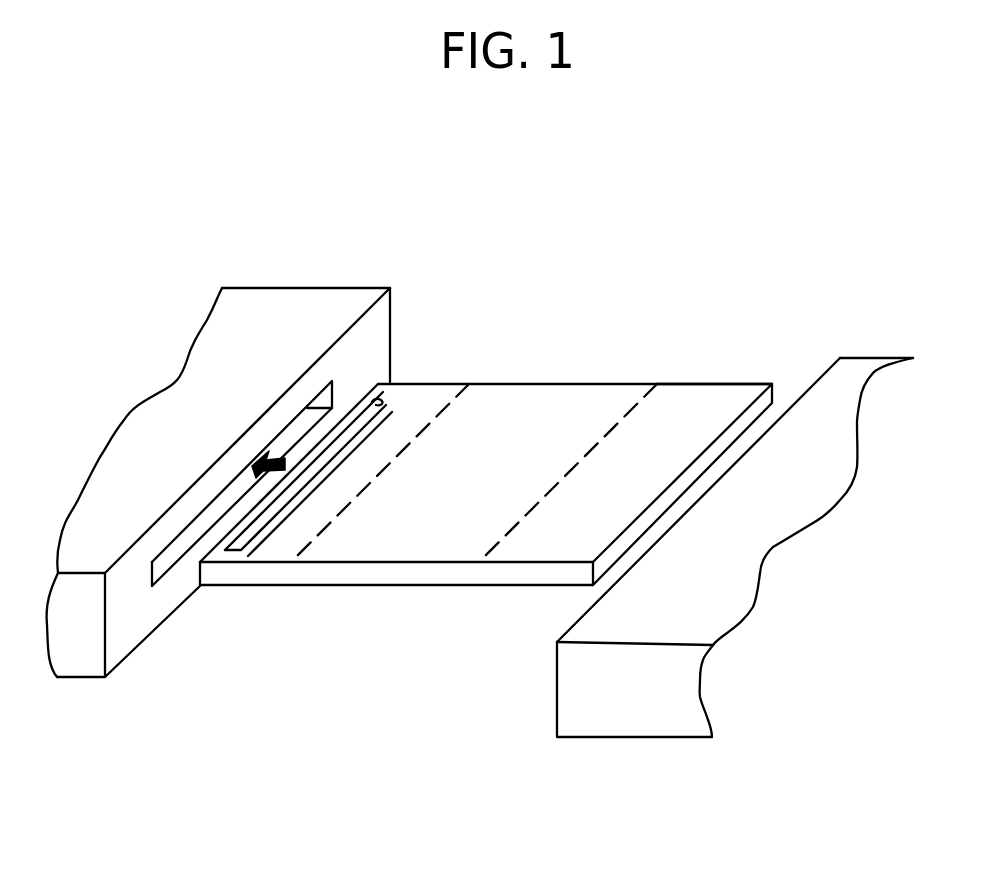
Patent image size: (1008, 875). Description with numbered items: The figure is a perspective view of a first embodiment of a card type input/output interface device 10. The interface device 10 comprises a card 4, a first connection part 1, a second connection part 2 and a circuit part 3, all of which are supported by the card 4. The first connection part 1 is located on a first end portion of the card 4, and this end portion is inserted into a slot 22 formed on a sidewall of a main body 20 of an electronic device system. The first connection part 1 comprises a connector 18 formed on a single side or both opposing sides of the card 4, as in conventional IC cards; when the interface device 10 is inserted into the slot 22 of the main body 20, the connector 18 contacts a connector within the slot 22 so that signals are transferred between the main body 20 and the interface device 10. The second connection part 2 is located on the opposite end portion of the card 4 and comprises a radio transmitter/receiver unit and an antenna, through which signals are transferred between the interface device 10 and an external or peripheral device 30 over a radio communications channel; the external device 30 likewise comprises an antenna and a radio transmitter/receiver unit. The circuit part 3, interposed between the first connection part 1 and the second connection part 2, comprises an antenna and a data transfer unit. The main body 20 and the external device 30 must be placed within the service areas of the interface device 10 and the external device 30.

The first connection part 1 is at (433, 397).
The second connection part 2 is at (698, 397).
The circuit part 3 is at (558, 392).
The card 4 is at (434, 591).
The card type input/output interface device 10 is at (486, 450).
The connector 18 is at (379, 402).
The main body 20 is at (292, 283).
The slot 22 is at (167, 559).
The external device 30 is at (882, 340).